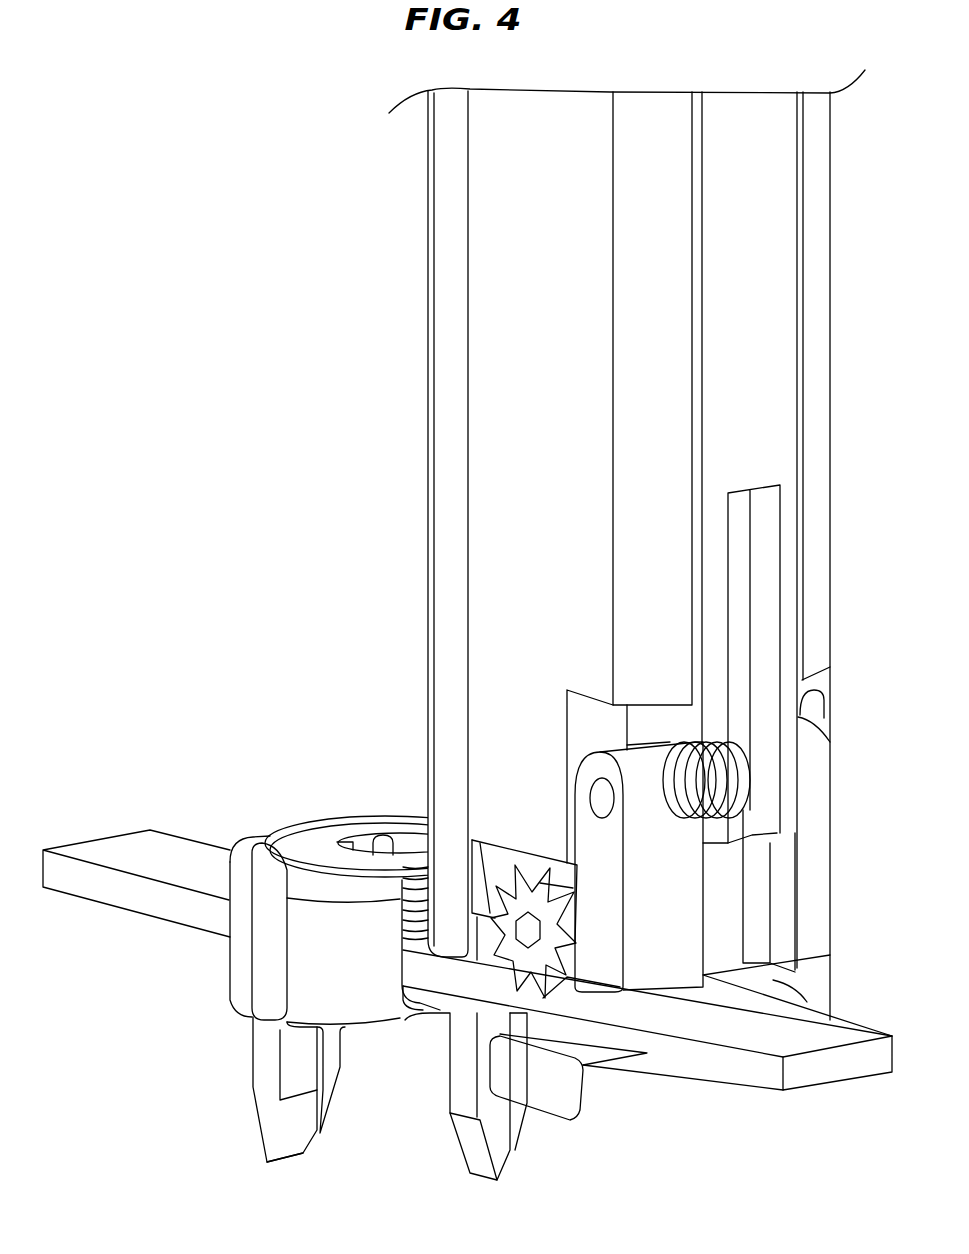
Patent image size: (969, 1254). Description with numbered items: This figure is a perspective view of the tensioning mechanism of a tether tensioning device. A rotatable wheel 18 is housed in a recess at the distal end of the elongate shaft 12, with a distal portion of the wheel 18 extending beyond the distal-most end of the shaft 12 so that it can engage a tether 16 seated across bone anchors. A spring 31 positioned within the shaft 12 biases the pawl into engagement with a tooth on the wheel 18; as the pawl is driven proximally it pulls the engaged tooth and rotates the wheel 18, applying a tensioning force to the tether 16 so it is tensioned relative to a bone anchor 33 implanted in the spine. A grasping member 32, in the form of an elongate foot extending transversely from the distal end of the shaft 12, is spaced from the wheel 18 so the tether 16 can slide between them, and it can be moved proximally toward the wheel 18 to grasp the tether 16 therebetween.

The elongate shaft 12 is at (428, 340).
The tether 16 is at (190, 855).
The rotatable wheel 18 is at (520, 962).
The spring 31 is at (742, 788).
The grasping member 32 is at (611, 1092).
The bone anchor 33 is at (266, 1092).